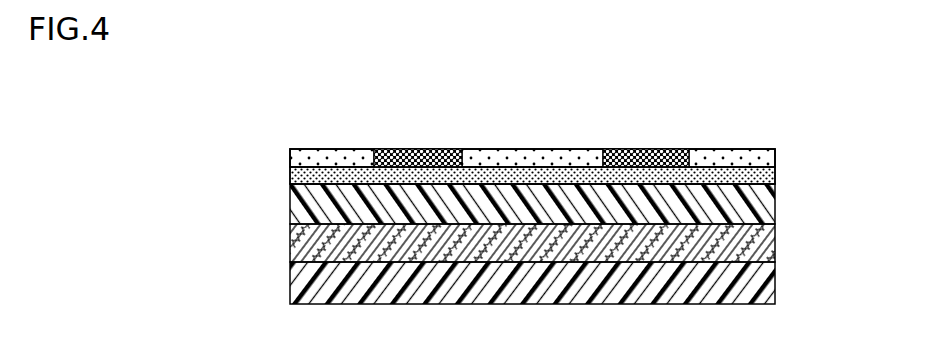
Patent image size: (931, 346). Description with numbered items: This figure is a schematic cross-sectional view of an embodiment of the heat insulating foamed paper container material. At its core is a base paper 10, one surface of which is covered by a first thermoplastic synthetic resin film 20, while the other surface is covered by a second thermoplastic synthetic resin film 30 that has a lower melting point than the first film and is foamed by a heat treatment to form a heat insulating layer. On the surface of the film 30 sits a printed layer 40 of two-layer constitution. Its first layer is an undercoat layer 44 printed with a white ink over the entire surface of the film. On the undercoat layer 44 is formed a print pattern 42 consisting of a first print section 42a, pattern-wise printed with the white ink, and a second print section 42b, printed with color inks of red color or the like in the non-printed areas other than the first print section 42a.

The base paper 10 is at (776, 245).
The first thermoplastic synthetic resin film 20 is at (776, 287).
The second thermoplastic synthetic resin film 30 is at (776, 196).
The printed layer 40 is at (823, 78).
The print pattern 42 is at (775, 65).
The first print section 42a is at (672, 150).
The second print section 42b is at (707, 151).
The undercoat layer 44 is at (777, 175).